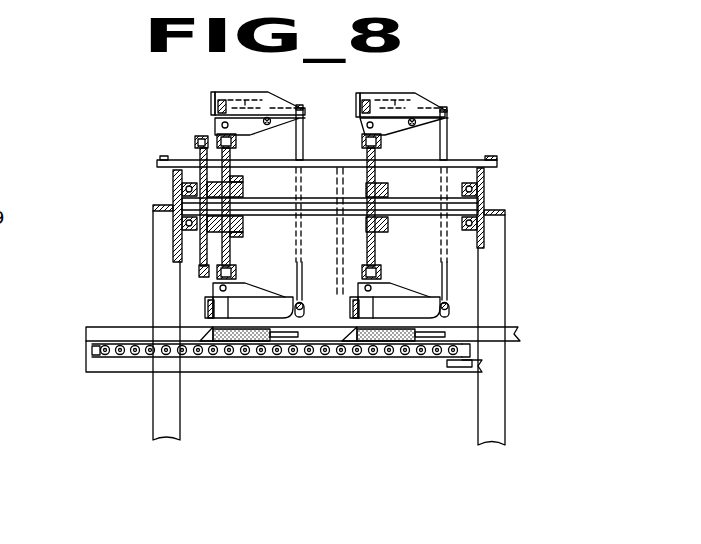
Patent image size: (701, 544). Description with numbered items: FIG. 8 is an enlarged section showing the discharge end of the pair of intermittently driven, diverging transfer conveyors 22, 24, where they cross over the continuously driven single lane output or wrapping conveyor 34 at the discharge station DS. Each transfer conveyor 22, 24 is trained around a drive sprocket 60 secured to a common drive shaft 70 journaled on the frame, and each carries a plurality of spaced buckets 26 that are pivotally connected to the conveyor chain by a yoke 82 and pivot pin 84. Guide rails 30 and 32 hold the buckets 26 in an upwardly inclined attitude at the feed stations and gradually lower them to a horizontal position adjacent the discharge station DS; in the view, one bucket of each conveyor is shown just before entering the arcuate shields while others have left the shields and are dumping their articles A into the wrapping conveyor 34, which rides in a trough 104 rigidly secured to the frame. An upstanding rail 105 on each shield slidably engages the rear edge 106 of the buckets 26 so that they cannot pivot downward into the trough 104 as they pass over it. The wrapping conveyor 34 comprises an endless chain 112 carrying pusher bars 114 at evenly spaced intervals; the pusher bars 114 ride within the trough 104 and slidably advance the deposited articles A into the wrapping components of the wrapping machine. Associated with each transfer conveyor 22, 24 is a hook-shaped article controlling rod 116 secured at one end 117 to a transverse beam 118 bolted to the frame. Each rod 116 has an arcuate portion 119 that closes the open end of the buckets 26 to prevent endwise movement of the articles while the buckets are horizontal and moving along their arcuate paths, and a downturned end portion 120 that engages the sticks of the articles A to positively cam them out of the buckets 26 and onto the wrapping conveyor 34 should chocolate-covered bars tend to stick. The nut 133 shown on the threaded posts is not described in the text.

The transfer conveyor 22 is at (398, 133).
The transfer conveyor 24 is at (213, 122).
The bucket 26 is at (262, 100).
The guide rail 30 is at (416, 123).
The guide rail 32 is at (243, 128).
The output or wrapping conveyor 34 is at (89, 326).
The drive sprocket 60 is at (240, 184).
The drive shaft 70 is at (337, 212).
The yoke 82 is at (234, 144).
The pivot pin 84 is at (222, 124).
The trough 104 is at (85, 333).
The upstanding rail 105 is at (208, 308).
The rear edge 106 is at (211, 96).
The endless chain 112 is at (95, 351).
The pusher bar 114 is at (212, 343).
The article controlling rod 116 is at (314, 99).
The end 117 is at (318, 160).
The transverse beam 118 is at (157, 163).
The arcuate portion 119 is at (303, 230).
The downturned end portion 120 is at (326, 308).
The lock nut 133 is at (195, 147).
The discharge station DS is at (454, 322).
The article A is at (243, 100).